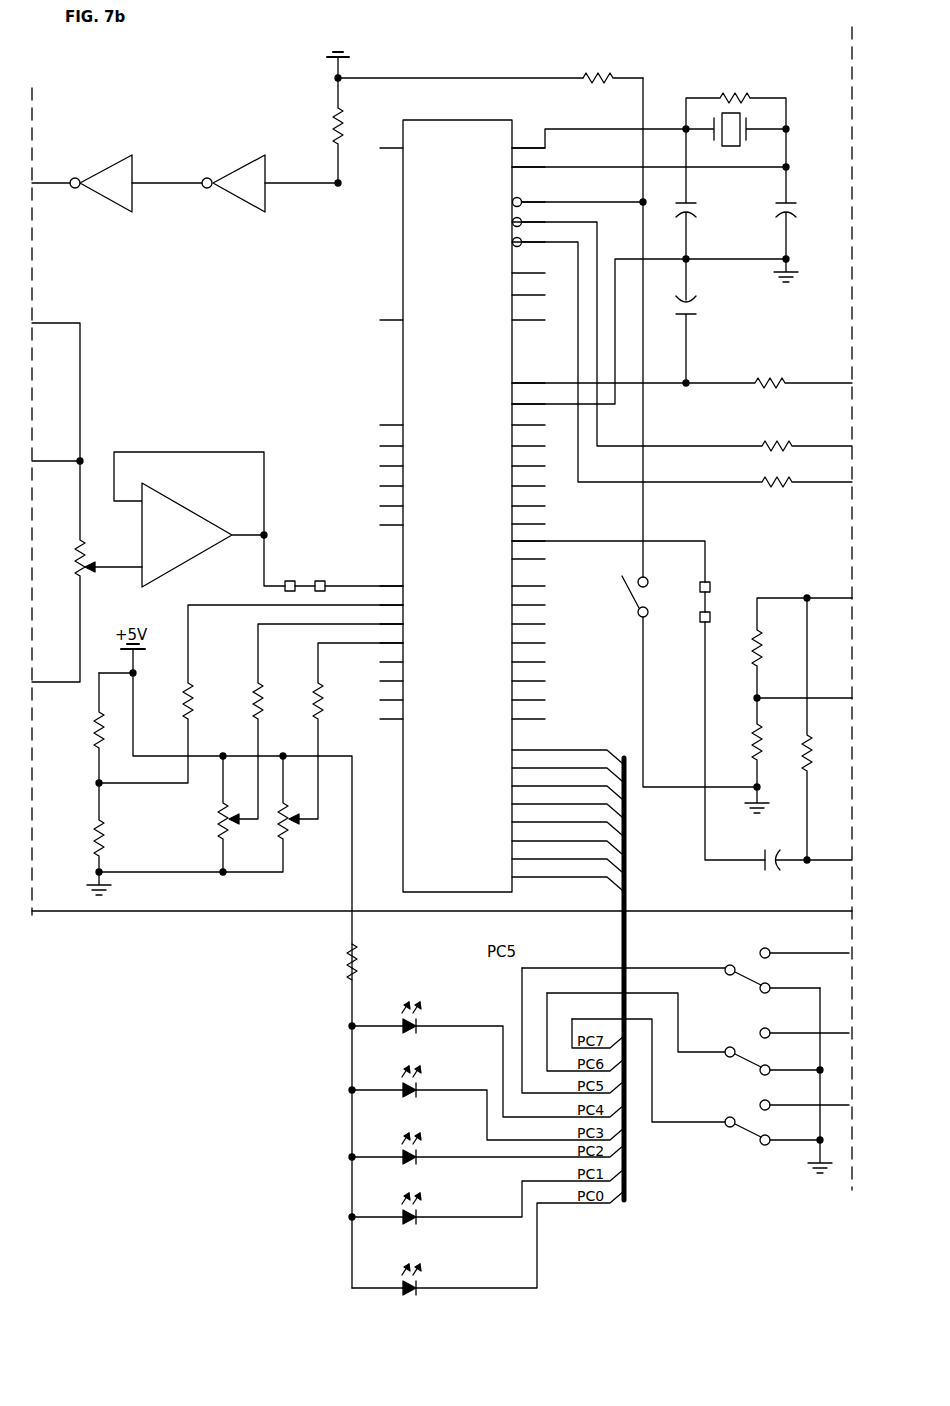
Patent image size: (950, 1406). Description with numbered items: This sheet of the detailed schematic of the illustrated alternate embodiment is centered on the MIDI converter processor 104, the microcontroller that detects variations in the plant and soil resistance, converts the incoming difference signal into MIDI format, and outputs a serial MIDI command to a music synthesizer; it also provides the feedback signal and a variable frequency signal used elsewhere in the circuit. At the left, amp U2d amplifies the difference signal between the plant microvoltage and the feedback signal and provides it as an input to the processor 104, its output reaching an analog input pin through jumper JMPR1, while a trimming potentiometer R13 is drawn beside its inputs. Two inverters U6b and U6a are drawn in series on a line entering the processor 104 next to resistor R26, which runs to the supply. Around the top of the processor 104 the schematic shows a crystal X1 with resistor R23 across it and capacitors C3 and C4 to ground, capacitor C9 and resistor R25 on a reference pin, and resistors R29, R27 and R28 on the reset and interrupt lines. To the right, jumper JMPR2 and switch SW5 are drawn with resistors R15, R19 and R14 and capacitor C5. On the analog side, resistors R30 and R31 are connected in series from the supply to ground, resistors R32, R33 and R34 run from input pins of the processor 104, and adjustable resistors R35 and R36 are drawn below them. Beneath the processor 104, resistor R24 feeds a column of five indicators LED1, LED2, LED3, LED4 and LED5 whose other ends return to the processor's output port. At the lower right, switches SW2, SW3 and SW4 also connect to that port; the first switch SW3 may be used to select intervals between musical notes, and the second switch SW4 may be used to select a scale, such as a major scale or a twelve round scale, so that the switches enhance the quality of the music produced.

The processor 104 is at (403, 250).
The inverter 74ALS04BN U6b is at (117, 184).
The inverter 74ALS04BN U6a is at (263, 184).
The 4.7K pull-up resistor R26 is at (322, 105).
The 4.7K resistor R29 is at (601, 62).
The 10M resistor R23 is at (722, 97).
The 8MHz crystal X1 is at (673, 127).
The 18pF capacitor C3 is at (712, 194).
The 18pF capacitor C4 is at (807, 205).
The 1.0uF capacitor C9 is at (714, 322).
The 1.0K resistor R25 is at (682, 363).
The 4.7K resistor R27 is at (682, 346).
The 4.7K resistor R28 is at (682, 376).
The jumper JMPR2 is at (638, 700).
The switch SW5 is at (671, 681).
The 10K resistor R15 is at (785, 648).
The 68K resistor R19 is at (743, 755).
The 10K resistor R14 is at (818, 730).
The 470pF capacitor C5 is at (785, 868).
The 50K trim potentiometer R13 is at (84, 502).
The amp U2d is at (199, 519).
The jumper JMPR1 is at (337, 565).
The 4.75K resistor R30 is at (76, 729).
The 4.75K resistor R31 is at (76, 839).
The 1.0K resistor R32 is at (251, 694).
The 1.0K resistor R33 is at (316, 724).
The 1.0K resistor R34 is at (346, 733).
The 10K potentiometer R35 is at (168, 815).
The 10K potentiometer R36 is at (276, 814).
The 1K resistor R24 is at (333, 963).
The red LED LED1 is at (486, 1039).
The yellow LED LED2 is at (486, 1088).
The green LED LED3 is at (486, 1136).
The yellow LED LED4 is at (486, 1193).
The red LED LED5 is at (488, 1243).
The switch SW2 is at (685, 964).
The first switch SW3 is at (698, 1038).
The second switch SW4 is at (710, 1086).